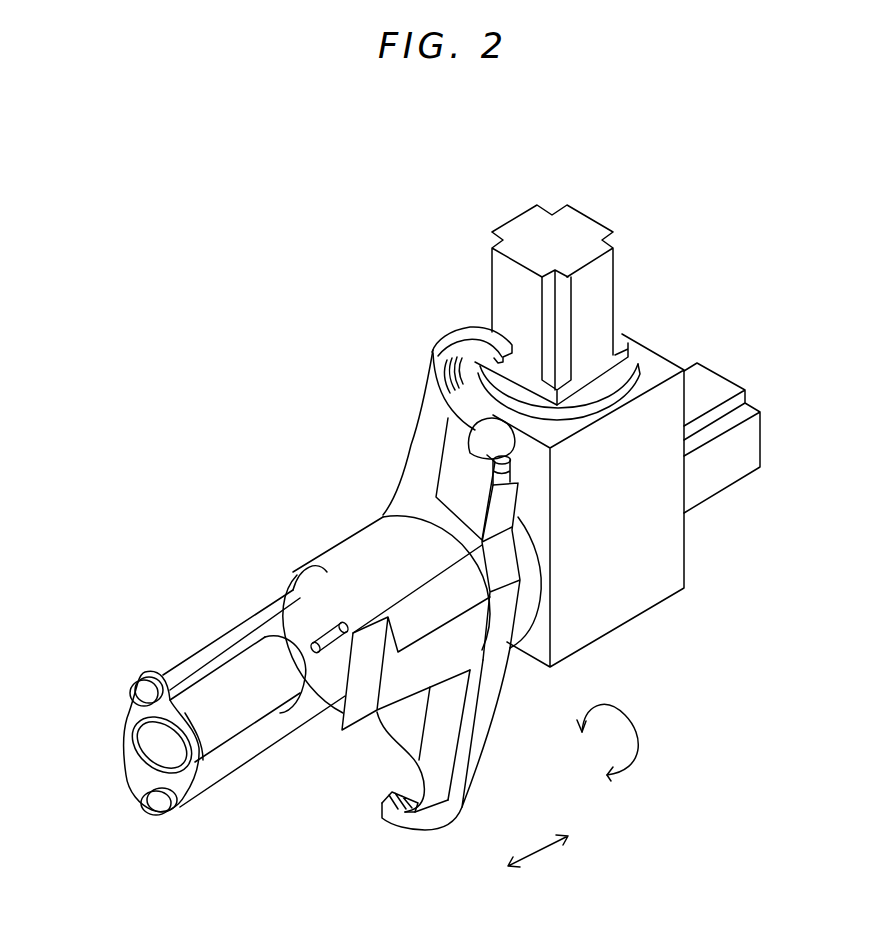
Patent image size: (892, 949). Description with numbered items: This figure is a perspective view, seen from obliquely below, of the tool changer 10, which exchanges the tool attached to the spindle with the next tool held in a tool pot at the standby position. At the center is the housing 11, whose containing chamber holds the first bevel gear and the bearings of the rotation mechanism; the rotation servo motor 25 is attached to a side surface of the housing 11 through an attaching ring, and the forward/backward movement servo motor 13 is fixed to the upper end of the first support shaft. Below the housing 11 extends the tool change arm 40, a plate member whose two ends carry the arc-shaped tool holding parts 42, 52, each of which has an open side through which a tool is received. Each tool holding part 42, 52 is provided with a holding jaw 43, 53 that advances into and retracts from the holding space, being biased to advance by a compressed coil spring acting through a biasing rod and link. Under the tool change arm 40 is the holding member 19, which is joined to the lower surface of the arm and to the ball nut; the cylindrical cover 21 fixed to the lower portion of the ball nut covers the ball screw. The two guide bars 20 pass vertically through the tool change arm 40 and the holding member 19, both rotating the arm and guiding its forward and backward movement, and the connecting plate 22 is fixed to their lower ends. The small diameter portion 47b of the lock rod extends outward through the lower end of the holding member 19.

The tool changer 10 is at (294, 254).
The housing 11 is at (680, 548).
The forward/backward movement servo motor 13 is at (718, 378).
The holding member 19 is at (333, 553).
The guide bars 20 is at (255, 615).
The cylindrical cover 21 is at (243, 710).
The connecting plate 22 is at (128, 718).
The rotation servo motor 25 is at (585, 220).
The tool change arm 40 is at (480, 707).
The tool holding part 42 is at (447, 372).
The holding jaw 43 is at (485, 430).
The small diameter portion 47b is at (326, 622).
The tool holding part 52 is at (371, 790).
The holding jaw 53 is at (375, 735).